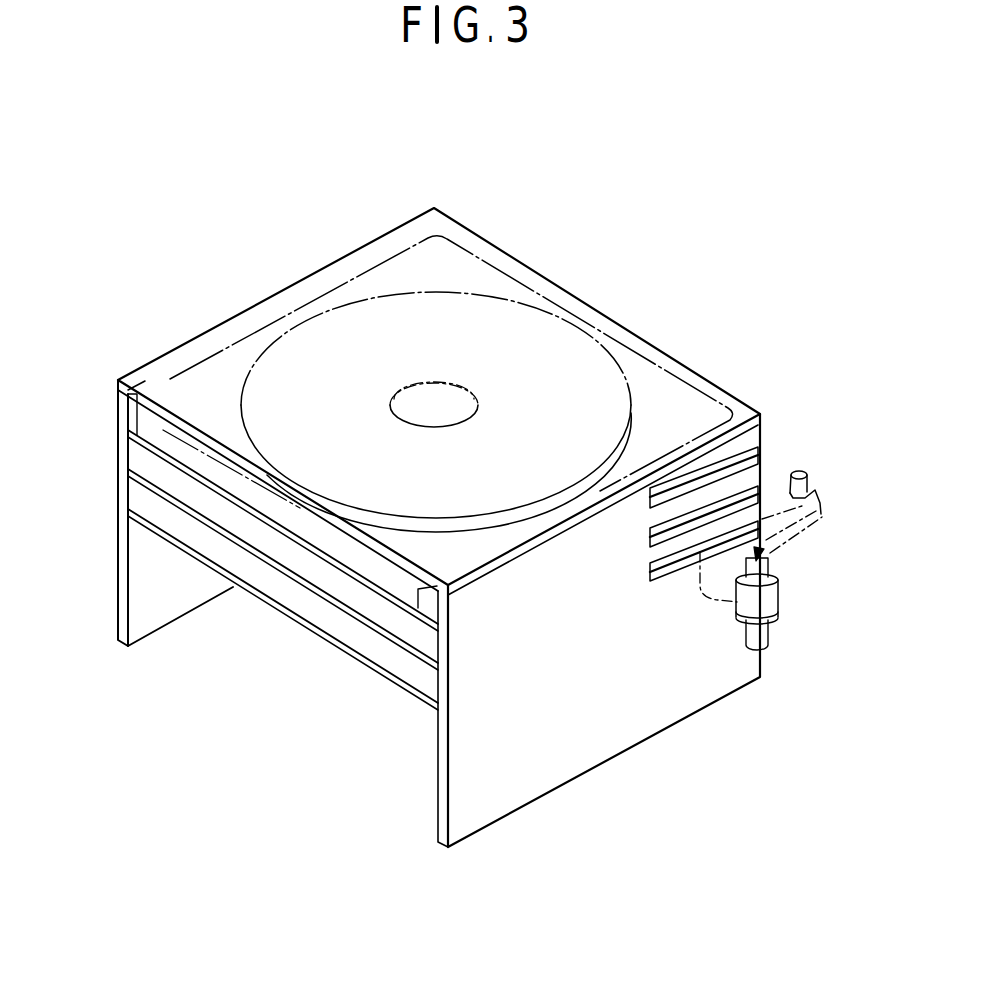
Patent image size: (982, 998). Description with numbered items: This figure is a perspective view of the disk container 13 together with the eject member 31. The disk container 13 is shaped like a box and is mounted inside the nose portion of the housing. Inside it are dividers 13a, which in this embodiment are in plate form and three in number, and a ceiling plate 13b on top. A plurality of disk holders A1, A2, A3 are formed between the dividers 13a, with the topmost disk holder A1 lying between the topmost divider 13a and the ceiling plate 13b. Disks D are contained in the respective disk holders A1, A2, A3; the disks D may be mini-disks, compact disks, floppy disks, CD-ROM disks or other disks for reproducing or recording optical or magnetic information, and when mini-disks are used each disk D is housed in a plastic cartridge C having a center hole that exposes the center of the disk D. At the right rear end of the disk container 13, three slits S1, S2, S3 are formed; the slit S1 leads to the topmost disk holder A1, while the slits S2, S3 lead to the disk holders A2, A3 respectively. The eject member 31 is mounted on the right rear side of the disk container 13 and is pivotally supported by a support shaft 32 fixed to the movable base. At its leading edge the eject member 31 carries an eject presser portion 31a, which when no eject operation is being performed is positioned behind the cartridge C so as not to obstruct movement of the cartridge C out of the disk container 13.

The disk container 13 is at (262, 284).
The dividers 13a is at (388, 583).
The ceiling plate 13b is at (176, 410).
The disk holder A1 is at (138, 412).
The disk holder A2 is at (150, 464).
The disk holder A3 is at (152, 502).
The cartridge C is at (540, 280).
The disk D is at (622, 368).
The slit S1 is at (650, 503).
The slit S2 is at (660, 541).
The slit S3 is at (667, 580).
The eject member 31 is at (808, 511).
The eject presser portion 31a is at (801, 472).
The support shaft 32 is at (770, 567).